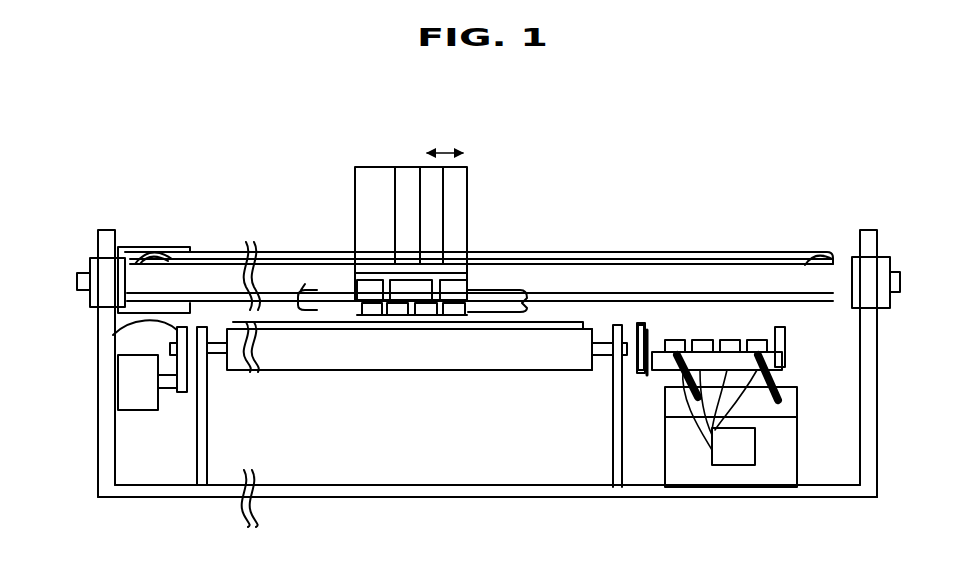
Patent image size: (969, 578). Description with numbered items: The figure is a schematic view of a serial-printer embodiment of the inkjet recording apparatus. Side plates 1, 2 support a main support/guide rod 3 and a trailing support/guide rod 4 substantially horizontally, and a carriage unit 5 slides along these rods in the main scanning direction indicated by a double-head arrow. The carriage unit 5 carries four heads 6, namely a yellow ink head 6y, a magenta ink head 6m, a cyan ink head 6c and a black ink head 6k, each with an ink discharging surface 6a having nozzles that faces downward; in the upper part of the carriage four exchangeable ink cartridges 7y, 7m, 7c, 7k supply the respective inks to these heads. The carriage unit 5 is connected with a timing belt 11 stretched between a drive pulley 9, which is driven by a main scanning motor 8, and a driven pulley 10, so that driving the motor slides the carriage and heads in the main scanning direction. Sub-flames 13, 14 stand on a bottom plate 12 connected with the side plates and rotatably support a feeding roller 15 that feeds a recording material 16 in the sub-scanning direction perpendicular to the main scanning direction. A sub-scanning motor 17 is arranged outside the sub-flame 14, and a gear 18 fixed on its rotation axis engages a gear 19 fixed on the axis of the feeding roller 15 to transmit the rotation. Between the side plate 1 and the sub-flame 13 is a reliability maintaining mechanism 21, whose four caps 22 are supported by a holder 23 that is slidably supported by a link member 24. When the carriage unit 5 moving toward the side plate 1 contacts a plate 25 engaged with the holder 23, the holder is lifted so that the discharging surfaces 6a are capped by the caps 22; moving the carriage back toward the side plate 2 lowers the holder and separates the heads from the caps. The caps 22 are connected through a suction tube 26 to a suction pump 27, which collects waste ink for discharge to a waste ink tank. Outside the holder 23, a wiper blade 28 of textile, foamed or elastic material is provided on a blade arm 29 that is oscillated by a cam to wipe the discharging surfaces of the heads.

The side plate 1 is at (870, 433).
The side plate 2 is at (103, 442).
The main support/guide rod 3 is at (547, 278).
The trailing support/guide rod 4 is at (290, 252).
The carriage unit 5 is at (315, 300).
The heads 6 is at (415, 319).
The ink discharging surface 6a is at (366, 338).
The black ink head 6k is at (378, 316).
The cyan ink head 6c is at (403, 316).
The magenta ink head 6m is at (432, 316).
The yellow ink head 6y is at (460, 316).
The black ink cartridge 7k is at (373, 182).
The cyan ink cartridge 7c is at (408, 175).
The magenta ink cartridge 7m is at (425, 175).
The yellow ink cartridge 7y is at (455, 183).
The main scanning motor 8 is at (124, 255).
The drive pulley 9 is at (152, 258).
The driven pulley 10 is at (822, 258).
The timing belt 11 is at (515, 250).
The bottom plate 12 is at (813, 493).
The sub-flame 13 is at (614, 450).
The sub-flame 14 is at (208, 465).
The feeding roller 15 is at (553, 358).
The recording material 16 is at (505, 328).
The sub-scanning motor 17 is at (120, 377).
The gear 18 is at (180, 394).
The gear 19 is at (178, 328).
The reliability maintaining mechanism 21 is at (775, 318).
The caps 22 is at (755, 340).
The holder 23 is at (668, 365).
The link member 24 is at (778, 392).
The plate 25 is at (785, 343).
The suction tube 26 is at (690, 447).
The suction pump 27 is at (730, 465).
The wiper blade 28 is at (645, 325).
The blade arm 29 is at (640, 323).